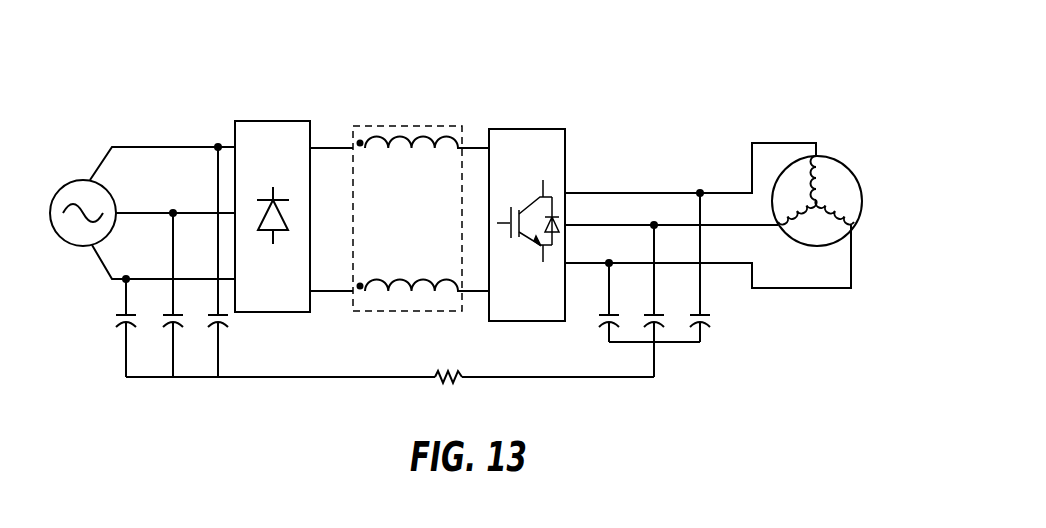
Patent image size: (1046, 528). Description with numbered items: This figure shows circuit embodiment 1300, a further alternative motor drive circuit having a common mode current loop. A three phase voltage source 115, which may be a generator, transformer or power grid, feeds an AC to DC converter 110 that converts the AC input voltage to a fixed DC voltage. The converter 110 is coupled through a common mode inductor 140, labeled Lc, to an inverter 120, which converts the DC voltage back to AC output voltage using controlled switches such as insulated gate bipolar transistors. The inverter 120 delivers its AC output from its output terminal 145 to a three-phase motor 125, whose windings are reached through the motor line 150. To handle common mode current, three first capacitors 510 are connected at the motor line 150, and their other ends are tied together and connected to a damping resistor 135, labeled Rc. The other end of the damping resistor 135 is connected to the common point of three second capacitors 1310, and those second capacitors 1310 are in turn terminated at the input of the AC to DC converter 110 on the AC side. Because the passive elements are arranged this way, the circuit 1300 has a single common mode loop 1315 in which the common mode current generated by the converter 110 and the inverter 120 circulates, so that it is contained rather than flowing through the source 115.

The circuit embodiment 1300 is at (806, 47).
The three phase voltage source 115 is at (88, 179).
The capacitors Cc2 1310 is at (90, 339).
The AC to DC converter 110 is at (273, 121).
The common mode inductor 140 is at (418, 126).
The inverter 120 is at (527, 129).
The output terminal 145 is at (567, 193).
The capacitors Cc1 510 is at (733, 334).
The damping resistor 135 is at (462, 379).
The single common mode loop 1315 is at (533, 377).
The motor 125 is at (852, 176).
The motor line 150 is at (819, 155).